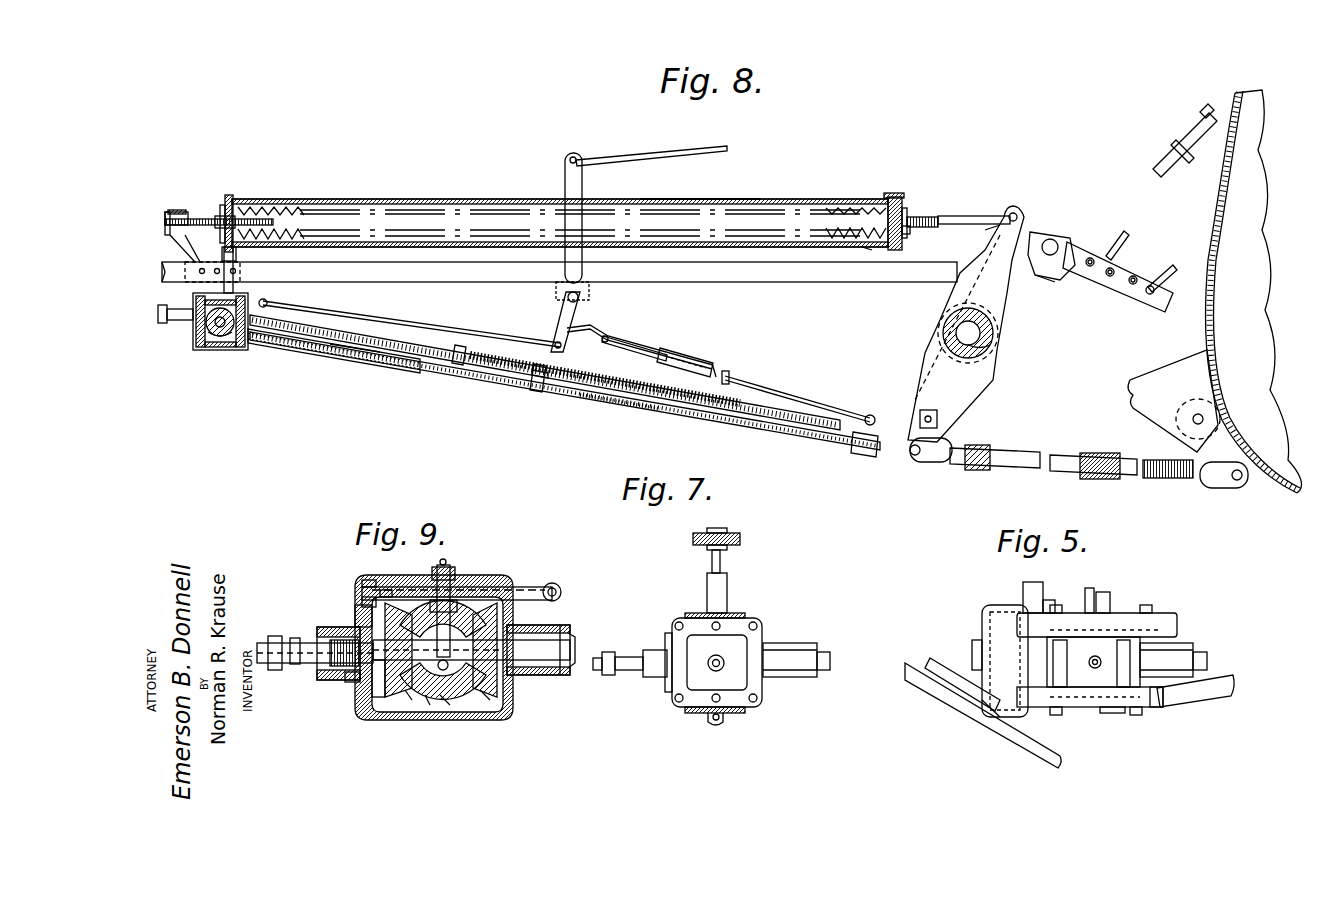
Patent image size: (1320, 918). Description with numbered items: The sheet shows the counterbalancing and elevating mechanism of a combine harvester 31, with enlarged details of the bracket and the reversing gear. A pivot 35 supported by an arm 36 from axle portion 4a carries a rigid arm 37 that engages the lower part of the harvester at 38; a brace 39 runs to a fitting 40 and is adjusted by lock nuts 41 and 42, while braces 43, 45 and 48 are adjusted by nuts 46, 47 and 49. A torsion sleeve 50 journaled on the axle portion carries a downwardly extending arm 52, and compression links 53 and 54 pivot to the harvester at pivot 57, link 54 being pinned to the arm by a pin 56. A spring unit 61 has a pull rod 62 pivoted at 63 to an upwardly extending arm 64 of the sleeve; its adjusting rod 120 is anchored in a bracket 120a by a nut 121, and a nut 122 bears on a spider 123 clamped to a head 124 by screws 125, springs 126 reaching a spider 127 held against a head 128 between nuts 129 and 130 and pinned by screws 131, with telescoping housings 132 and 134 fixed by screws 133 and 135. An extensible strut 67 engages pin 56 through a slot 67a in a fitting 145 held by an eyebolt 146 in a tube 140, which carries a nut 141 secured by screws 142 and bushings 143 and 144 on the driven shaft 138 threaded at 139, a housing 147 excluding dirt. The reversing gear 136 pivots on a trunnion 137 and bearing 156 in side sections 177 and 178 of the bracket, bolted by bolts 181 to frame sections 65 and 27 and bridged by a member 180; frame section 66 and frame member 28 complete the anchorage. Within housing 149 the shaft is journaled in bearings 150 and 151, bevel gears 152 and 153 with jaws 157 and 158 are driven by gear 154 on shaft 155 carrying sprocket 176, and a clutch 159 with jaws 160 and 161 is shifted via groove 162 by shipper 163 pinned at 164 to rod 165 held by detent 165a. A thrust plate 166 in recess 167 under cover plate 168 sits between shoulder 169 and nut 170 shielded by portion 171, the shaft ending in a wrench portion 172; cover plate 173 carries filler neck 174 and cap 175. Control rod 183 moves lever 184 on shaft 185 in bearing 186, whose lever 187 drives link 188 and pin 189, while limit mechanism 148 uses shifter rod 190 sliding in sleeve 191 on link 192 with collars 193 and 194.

In FIG. 8, the brace 27 is at (850, 282).
In FIG. 5, the brace 27 is at (1225, 698).
In FIG. 5, the frame member 28 is at (1008, 752).
In FIG. 8, the harvester 31 is at (1248, 198).
In FIG. 8, the pivot 35 is at (1050, 239).
In FIG. 8, the arm 36 is at (1048, 282).
In FIG. 8, the arm 37 is at (1163, 378).
In FIG. 8, the engagement point 38 is at (1205, 418).
In FIG. 8, the brace 39 is at (1157, 270).
In FIG. 8, the fitting 40 is at (1185, 140).
In FIG. 8, the lock nut 41 is at (1170, 150).
In FIG. 8, the lock nut 42 is at (1206, 108).
In FIG. 8, the brace 43 is at (1122, 232).
In FIG. 8, the brace 45 is at (1110, 277).
In FIG. 8, the nut 46 is at (1090, 257).
In FIG. 8, the nut 47 is at (1106, 276).
In FIG. 8, the brace 48 is at (1135, 275).
In FIG. 8, the nut 49 is at (1133, 286).
In FIG. 8, the axle portion 4a is at (985, 345).
In FIG. 8, the sleeve 50 is at (940, 323).
In FIG. 8, the arm 52 is at (955, 370).
In FIG. 8, the compression link 53 is at (1210, 478).
In FIG. 8, the compression link 54 is at (1020, 452).
In FIG. 8, the pin 56 is at (910, 458).
In FIG. 8, the pivot 57 is at (1238, 481).
In FIG. 8, the spring unit 61 is at (792, 199).
In FIG. 8, the pull rod 62 is at (966, 216).
In FIG. 8, the pivot 63 is at (1013, 212).
In FIG. 8, the arm 64 is at (985, 232).
In FIG. 5, the frame section 65 is at (1172, 618).
In FIG. 8, the frame section 66 is at (168, 293).
In FIG. 5, the frame section 66 is at (1035, 582).
In FIG. 8, the extensible strut 67 is at (692, 415).
In FIG. 8, the slot 67a is at (935, 462).
In FIG. 8, the adjusting rod 120 is at (222, 216).
In FIG. 5, the adjusting rod 120 is at (975, 706).
In FIG. 8, the bracket 120a is at (172, 212).
In FIG. 5, the bracket 120a is at (978, 640).
In FIG. 8, the nut 121 is at (165, 230).
In FIG. 5, the nut 121 is at (982, 650).
In FIG. 8, the nut 122 is at (215, 226).
In FIG. 8, the spider 123 is at (262, 207).
In FIG. 8, the head 124 is at (185, 255).
In FIG. 8, the screws 125 is at (222, 205).
In FIG. 8, the springs 126 is at (300, 210).
In FIG. 8, the spider 127 is at (888, 200).
In FIG. 8, the head 128 is at (904, 208).
In FIG. 8, the nut 129 is at (867, 250).
In FIG. 8, the nut 130 is at (910, 232).
In FIG. 8, the screws 131 is at (918, 217).
In FIG. 8, the tubular housing member 132 is at (444, 199).
In FIG. 8, the screws 133 is at (230, 195).
In FIG. 8, the tubular housing member 134 is at (745, 199).
In FIG. 8, the screws 135 is at (894, 193).
In FIG. 8, the reversing gear 136 is at (196, 348).
In FIG. 9, the reversing gear 136 is at (514, 712).
In FIG. 7, the reversing gear 136 is at (768, 632).
In FIG. 5, the reversing gear 136 is at (1110, 690).
In FIG. 7, the trunnion 137 is at (724, 720).
In FIG. 8, the driven shaft 138 is at (452, 368).
In FIG. 9, the driven shaft 138 is at (471, 650).
In FIG. 7, the driven shaft 138 is at (832, 661).
In FIG. 5, the driven shaft 138 is at (1207, 661).
In FIG. 8, the threaded section 139 is at (612, 403).
In FIG. 8, the tubular element 140 is at (585, 395).
In FIG. 8, the nut 141 is at (555, 368).
In FIG. 8, the screws 142 is at (458, 346).
In FIG. 8, the bushing 143 is at (530, 378).
In FIG. 8, the bushing 144 is at (352, 355).
In FIG. 8, the fitting 145 is at (890, 432).
In FIG. 8, the eyebolt 146 is at (870, 415).
In FIG. 8, the tubular housing element 147 is at (317, 350).
In FIG. 9, the tubular housing element 147 is at (568, 625).
In FIG. 7, the tubular housing element 147 is at (805, 645).
In FIG. 5, the tubular housing element 147 is at (1185, 643).
In FIG. 8, the limit control mechanism 148 is at (705, 355).
In FIG. 8, the housing 149 is at (225, 348).
In FIG. 9, the housing 149 is at (450, 700).
In FIG. 9, the bearing portion 150 is at (540, 677).
In FIG. 9, the bearing portion 151 is at (378, 697).
In FIG. 9, the bevel gear 152 is at (398, 697).
In FIG. 9, the bevel gear 153 is at (490, 697).
In FIG. 8, the bevel gear 154 is at (210, 340).
In FIG. 9, the bevel gear 154 is at (458, 700).
In FIG. 7, the shaft 155 is at (720, 563).
In FIG. 5, the shaft 155 is at (1098, 588).
In FIG. 7, the bearing portion 156 is at (727, 595).
In FIG. 5, the bearing portion 156 is at (1110, 598).
In FIG. 9, the clutch jaws 157 is at (408, 700).
In FIG. 9, the clutch jaws 158 is at (490, 700).
In FIG. 9, the clutch element 159 is at (462, 625).
In FIG. 9, the clutch jaws 160 is at (437, 580).
In FIG. 9, the clutch jaws 161 is at (480, 592).
In FIG. 9, the groove 162 is at (448, 705).
In FIG. 9, the shipper 163 is at (428, 705).
In FIG. 9, the pin 164 is at (446, 600).
In FIG. 9, the rod 165 is at (548, 583).
In FIG. 5, the rod 165 is at (1160, 707).
In FIG. 9, the detent means 165a is at (370, 580).
In FIG. 9, the thrust bearing plate 166 is at (358, 605).
In FIG. 9, the recess 167 is at (352, 684).
In FIG. 9, the cover plate 168 is at (325, 632).
In FIG. 7, the cover plate 168 is at (655, 650).
In FIG. 9, the shoulder 169 is at (295, 638).
In FIG. 9, the nut 170 is at (320, 670).
In FIG. 9, the shielding portion 171 is at (340, 668).
In FIG. 7, the shielding portion 171 is at (665, 677).
In FIG. 8, the polygonal portion 172 is at (162, 323).
In FIG. 9, the polygonal portion 172 is at (275, 670).
In FIG. 7, the polygonal portion 172 is at (607, 676).
In FIG. 9, the cover plate 173 is at (365, 597).
In FIG. 7, the cover plate 173 is at (758, 686).
In FIG. 5, the cover plate 173 is at (1112, 713).
In FIG. 9, the filler neck 174 is at (455, 570).
In FIG. 9, the cap 175 is at (386, 590).
In FIG. 7, the cap 175 is at (724, 672).
In FIG. 5, the cap 175 is at (1110, 660).
In FIG. 7, the sprocket 176 is at (740, 535).
In FIG. 8, the side section 177 is at (228, 255).
In FIG. 5, the side section 177 is at (1044, 602).
In FIG. 5, the side section 178 is at (1082, 707).
In FIG. 8, the bridging member 180 is at (168, 212).
In FIG. 5, the bridging member 180 is at (990, 700).
In FIG. 8, the bolts 181 is at (240, 271).
In FIG. 5, the bolts 181 is at (1150, 605).
In FIG. 8, the control rod 183 is at (702, 148).
In FIG. 8, the lever 184 is at (582, 182).
In FIG. 8, the shaft 185 is at (565, 290).
In FIG. 8, the bearing 186 is at (585, 297).
In FIG. 8, the lever 187 is at (580, 312).
In FIG. 8, the link 188 is at (528, 340).
In FIG. 8, the pin 189 is at (270, 302).
In FIG. 8, the shifter rod 190 is at (845, 405).
In FIG. 8, the sleeve 191 is at (718, 368).
In FIG. 8, the link 192 is at (652, 348).
In FIG. 8, the collar 193 is at (606, 345).
In FIG. 8, the collar 194 is at (730, 386).